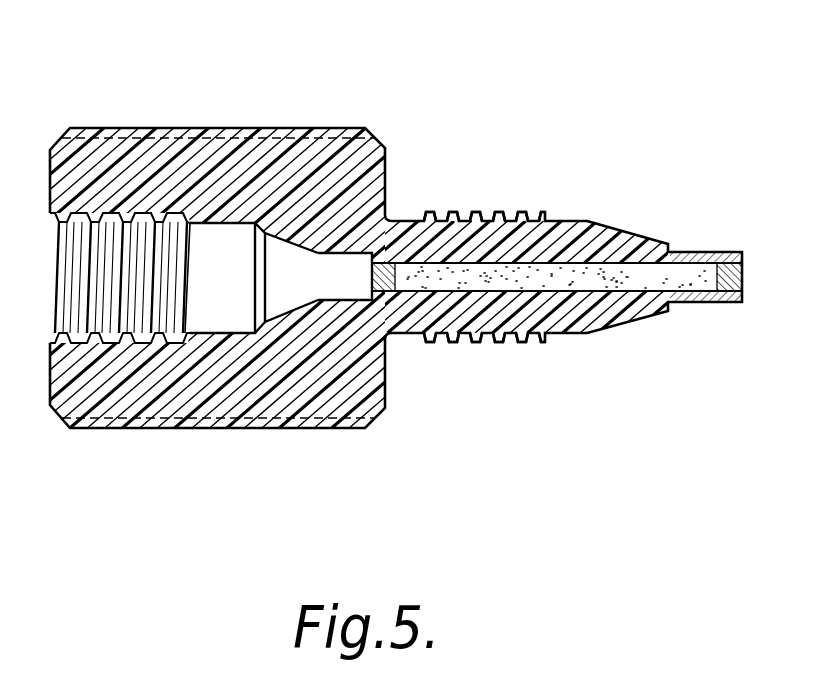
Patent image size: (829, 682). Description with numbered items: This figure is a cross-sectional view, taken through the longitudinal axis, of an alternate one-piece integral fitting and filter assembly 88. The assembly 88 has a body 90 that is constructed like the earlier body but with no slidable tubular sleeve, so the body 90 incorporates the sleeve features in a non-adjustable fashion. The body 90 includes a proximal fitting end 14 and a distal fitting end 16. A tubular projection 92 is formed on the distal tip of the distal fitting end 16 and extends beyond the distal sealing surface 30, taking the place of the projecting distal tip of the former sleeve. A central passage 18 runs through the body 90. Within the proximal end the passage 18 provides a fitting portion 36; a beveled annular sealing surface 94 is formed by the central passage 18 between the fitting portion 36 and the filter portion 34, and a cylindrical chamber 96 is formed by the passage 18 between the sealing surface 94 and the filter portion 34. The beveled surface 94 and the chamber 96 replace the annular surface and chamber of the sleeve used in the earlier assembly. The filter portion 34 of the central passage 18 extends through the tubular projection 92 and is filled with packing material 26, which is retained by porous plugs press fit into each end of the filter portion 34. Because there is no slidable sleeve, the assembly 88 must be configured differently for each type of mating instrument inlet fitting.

The one-piece integral fitting and filter assembly 88 is at (527, 45).
The proximal fitting end 14 is at (230, 111).
The central passage 18 is at (343, 273).
The body 90 is at (417, 195).
The distal fitting end 16 is at (558, 202).
The distal sealing surface 30 is at (631, 232).
The tubular projection 92 is at (718, 253).
The fitting portion 36 is at (137, 330).
The beveled annular sealing surface 94 is at (290, 308).
The cylindrical chamber 96 is at (350, 300).
The packing material 26 is at (520, 283).
The filter portion 34 is at (637, 285).